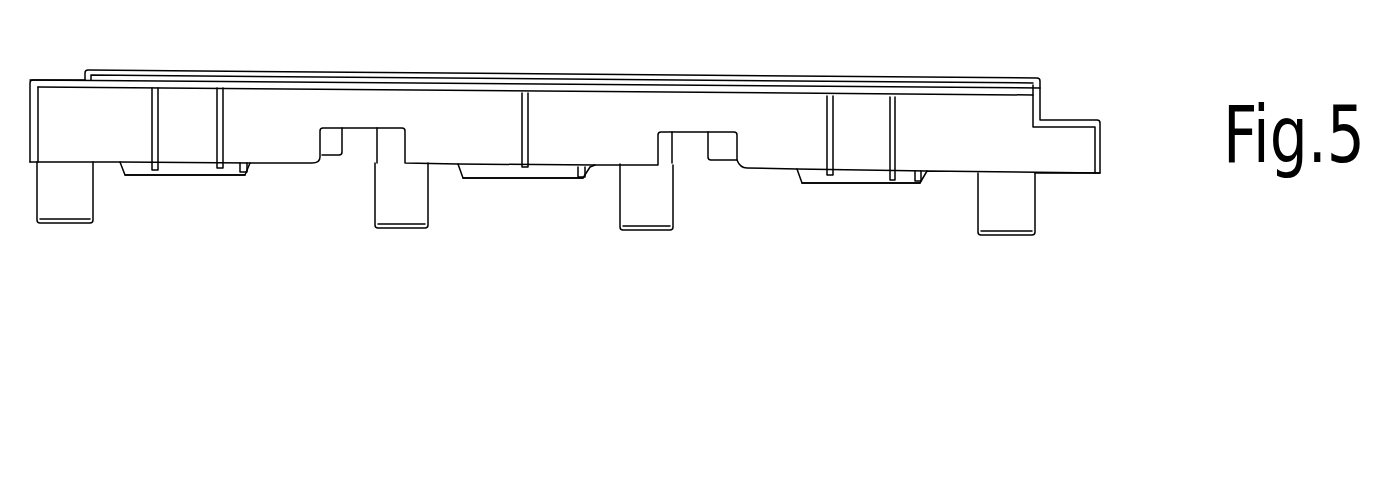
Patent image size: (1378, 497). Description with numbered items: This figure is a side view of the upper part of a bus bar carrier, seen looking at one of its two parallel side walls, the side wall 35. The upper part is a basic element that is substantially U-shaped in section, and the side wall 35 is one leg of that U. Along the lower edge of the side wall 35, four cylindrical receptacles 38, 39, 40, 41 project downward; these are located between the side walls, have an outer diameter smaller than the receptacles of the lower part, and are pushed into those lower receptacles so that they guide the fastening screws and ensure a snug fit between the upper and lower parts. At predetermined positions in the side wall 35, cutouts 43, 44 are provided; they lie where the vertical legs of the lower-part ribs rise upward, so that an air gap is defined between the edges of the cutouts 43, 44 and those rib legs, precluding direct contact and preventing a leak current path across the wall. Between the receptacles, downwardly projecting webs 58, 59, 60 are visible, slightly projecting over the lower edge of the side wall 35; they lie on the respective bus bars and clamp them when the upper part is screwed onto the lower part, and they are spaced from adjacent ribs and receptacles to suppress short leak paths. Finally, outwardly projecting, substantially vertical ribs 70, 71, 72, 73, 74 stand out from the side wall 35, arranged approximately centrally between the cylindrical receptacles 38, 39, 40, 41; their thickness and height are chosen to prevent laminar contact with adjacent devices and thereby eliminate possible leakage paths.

The side wall 35 is at (601, 143).
The cylindrical receptacle 38 is at (75, 210).
The cylindrical receptacle 39 is at (407, 213).
The cylindrical receptacle 40 is at (648, 210).
The cylindrical receptacle 41 is at (1018, 213).
The cutout 43 is at (362, 127).
The cutout 44 is at (698, 132).
The web 58 is at (197, 177).
The web 59 is at (530, 178).
The web 60 is at (860, 183).
The outwardly projecting rib 70 is at (158, 140).
The outwardly projecting rib 71 is at (222, 140).
The outwardly projecting rib 72 is at (520, 132).
The outwardly projecting rib 73 is at (823, 135).
The outwardly projecting rib 74 is at (900, 138).